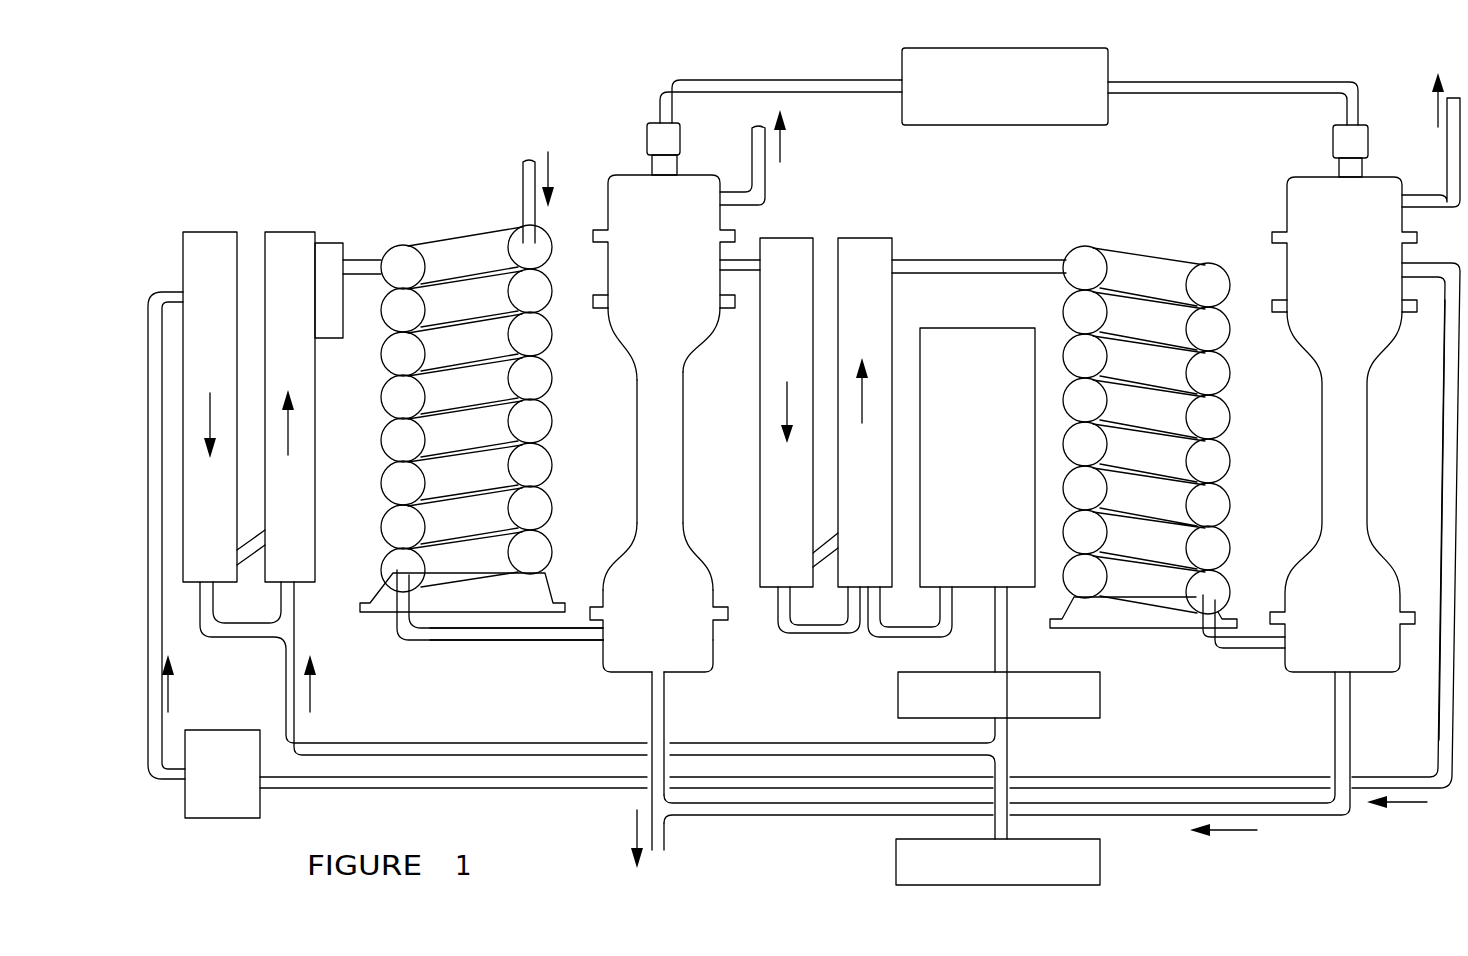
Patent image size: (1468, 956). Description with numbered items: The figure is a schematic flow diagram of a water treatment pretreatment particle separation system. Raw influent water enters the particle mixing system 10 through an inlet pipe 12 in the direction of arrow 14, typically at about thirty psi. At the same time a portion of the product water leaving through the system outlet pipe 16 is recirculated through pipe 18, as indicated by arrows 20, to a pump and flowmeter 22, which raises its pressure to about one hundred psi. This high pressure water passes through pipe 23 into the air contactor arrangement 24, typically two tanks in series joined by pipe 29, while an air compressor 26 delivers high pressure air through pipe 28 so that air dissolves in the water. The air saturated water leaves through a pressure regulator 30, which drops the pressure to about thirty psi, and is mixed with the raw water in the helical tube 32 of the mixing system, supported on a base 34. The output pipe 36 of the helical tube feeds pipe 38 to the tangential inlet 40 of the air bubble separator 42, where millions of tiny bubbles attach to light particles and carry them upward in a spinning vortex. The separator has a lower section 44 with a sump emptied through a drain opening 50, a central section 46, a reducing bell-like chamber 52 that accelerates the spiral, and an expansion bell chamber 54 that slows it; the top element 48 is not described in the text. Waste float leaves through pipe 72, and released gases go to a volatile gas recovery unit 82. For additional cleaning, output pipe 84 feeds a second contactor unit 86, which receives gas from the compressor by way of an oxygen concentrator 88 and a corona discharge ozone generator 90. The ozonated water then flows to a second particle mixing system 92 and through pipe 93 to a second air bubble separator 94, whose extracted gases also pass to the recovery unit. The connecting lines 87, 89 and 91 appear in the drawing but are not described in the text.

The particle mixing system 10 is at (441, 370).
The inlet pipe 12 is at (521, 182).
The arrow 14 is at (553, 165).
The system outlet pipe 16 is at (1447, 276).
The pipe 18 is at (480, 788).
The arrows 20 is at (1412, 806).
The pump and flowmeter 22 is at (206, 791).
The pipe 23 is at (150, 296).
The air contactor arrangement 24 is at (200, 232).
The air compressor 26 is at (981, 877).
The pipe 28 is at (200, 608).
The pipe 29 is at (250, 560).
The pressure regulator 30 is at (344, 243).
The helical tube 32 is at (385, 478).
The base 34 is at (376, 613).
The output pipe 36 is at (393, 572).
The pipe 38 is at (500, 641).
The inlet 40 is at (600, 666).
The air bubble separator 42 is at (630, 380).
The lower section 44 is at (650, 674).
The central section 46 is at (683, 448).
The turbine upper housing 48 is at (632, 175).
The drain opening 50 is at (665, 690).
The reducing bell-like chamber 52 is at (612, 565).
The expansion bell chamber 54 is at (605, 322).
The pipe 72 is at (765, 190).
The volatile gas recovery unit 82 is at (987, 104).
The output pipe 84 is at (745, 282).
The second contactor unit 86 is at (783, 238).
The cross-over conduit 87 is at (826, 560).
The oxygen concentrator 88 is at (981, 710).
The connecting conduit 89 is at (830, 641).
The ozone generator 90 is at (961, 473).
The compressor discharge conduit 91 is at (950, 260).
The second particle mixing system 92 is at (1140, 262).
The pipe 93 is at (1255, 650).
The second air bubble separator 94 is at (1320, 430).